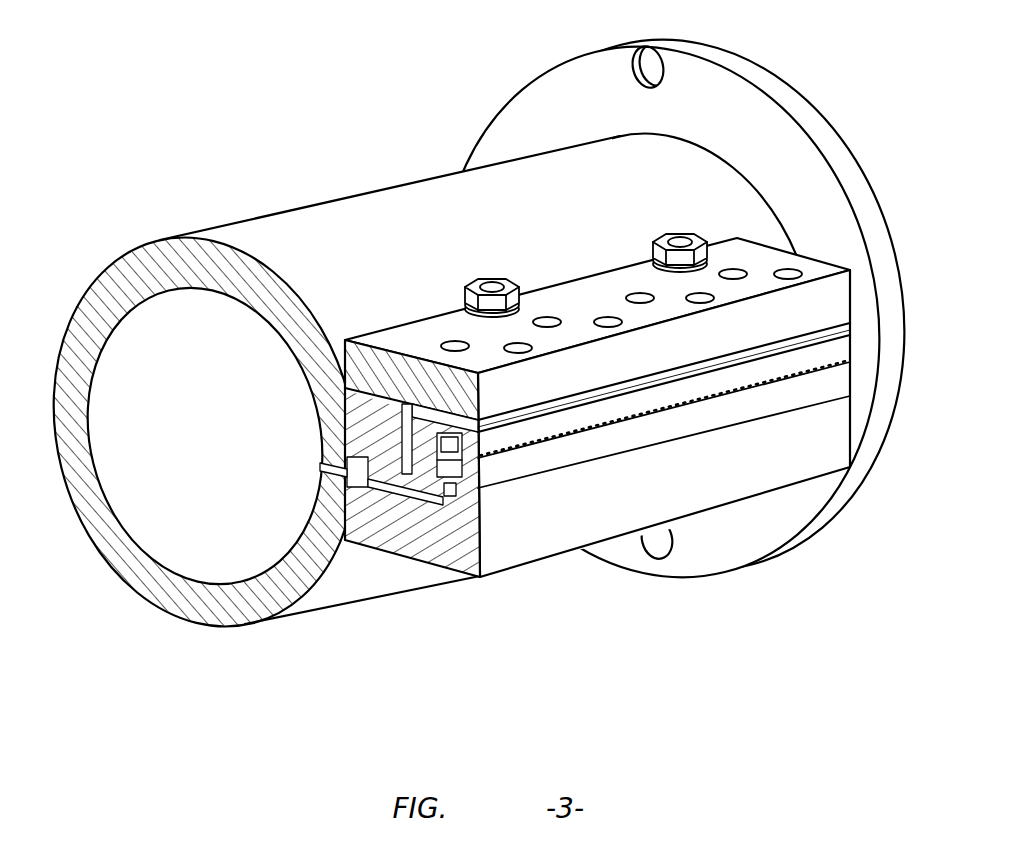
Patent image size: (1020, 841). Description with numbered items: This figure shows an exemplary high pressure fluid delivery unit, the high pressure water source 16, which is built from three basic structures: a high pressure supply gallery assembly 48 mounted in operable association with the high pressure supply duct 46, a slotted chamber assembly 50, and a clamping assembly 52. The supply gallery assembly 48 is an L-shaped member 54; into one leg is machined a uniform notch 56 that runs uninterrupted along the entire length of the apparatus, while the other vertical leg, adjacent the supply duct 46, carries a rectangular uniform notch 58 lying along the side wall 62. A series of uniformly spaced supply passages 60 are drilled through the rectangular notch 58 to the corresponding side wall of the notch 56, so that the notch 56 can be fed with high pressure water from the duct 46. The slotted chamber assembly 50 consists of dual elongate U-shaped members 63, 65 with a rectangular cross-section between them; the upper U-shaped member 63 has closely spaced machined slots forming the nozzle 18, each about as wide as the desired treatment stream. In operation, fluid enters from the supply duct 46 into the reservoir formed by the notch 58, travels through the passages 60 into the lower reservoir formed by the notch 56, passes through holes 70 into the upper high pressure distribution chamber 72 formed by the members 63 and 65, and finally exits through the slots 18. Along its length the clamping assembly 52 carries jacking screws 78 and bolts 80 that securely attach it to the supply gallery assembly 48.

The high pressure water source 16 is at (383, 144).
The nozzle slots 18 is at (610, 425).
The high pressure supply duct 46 is at (90, 437).
The high pressure supply gallery assembly 48 is at (767, 490).
The slotted chamber assembly 50 is at (578, 444).
The clamping assembly 52 is at (817, 258).
The L-shaped member 54 is at (481, 466).
The uniform notch 56 is at (478, 494).
The rectangular uniform notch 58 is at (356, 483).
The supply passages 60 is at (388, 493).
The side wall 62 is at (348, 485).
The upper U-shaped member 63 is at (795, 358).
The lower U-shaped member 65 is at (653, 433).
The holes 70 is at (478, 472).
The upper high pressure distribution chamber 72 is at (482, 458).
The jacking screws 78 is at (640, 297).
The bolts 80 is at (478, 290).